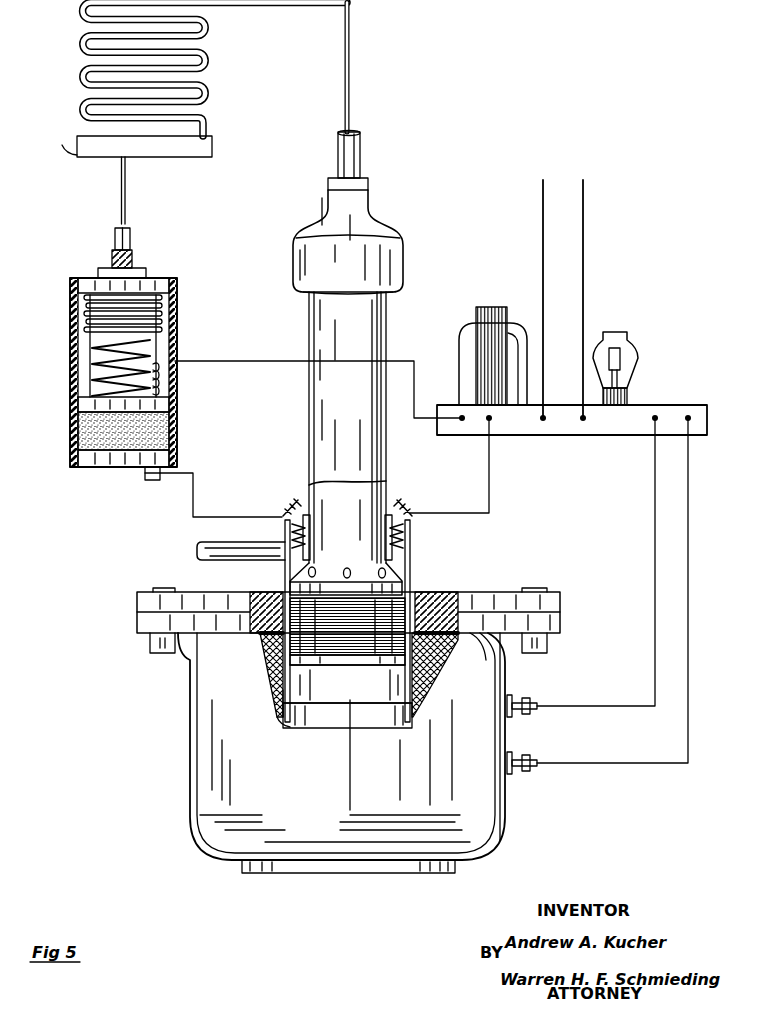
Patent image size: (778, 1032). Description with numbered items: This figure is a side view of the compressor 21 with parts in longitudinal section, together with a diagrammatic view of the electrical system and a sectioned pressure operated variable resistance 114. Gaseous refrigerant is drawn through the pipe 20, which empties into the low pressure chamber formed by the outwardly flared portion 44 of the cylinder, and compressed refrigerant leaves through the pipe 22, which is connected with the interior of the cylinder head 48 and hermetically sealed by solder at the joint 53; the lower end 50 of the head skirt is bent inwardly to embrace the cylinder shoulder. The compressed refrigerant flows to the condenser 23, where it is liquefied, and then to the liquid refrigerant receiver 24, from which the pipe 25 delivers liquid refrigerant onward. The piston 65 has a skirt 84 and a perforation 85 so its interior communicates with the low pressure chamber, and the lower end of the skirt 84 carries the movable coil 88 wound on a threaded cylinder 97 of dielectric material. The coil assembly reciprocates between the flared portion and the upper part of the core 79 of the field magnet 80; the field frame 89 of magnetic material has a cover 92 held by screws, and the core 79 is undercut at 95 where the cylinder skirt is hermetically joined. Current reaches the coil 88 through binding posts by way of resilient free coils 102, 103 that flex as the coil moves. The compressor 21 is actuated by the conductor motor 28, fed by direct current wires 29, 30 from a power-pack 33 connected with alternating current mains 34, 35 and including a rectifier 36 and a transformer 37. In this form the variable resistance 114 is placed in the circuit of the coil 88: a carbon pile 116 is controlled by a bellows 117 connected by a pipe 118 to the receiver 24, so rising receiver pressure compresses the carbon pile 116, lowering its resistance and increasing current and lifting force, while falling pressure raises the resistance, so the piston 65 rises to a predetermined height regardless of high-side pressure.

The pipe 20 is at (200, 553).
The compressor 21 is at (320, 408).
The pipe 22 is at (360, 148).
The condenser 23 is at (207, 62).
The liquid refrigerant receiver 24 is at (204, 147).
The pipe 25 is at (58, 162).
The conductor motor 28 is at (367, 866).
The wire 29 is at (655, 625).
The wire 30 is at (688, 622).
The power-pack 33 is at (580, 435).
The alternating current main 34 is at (543, 242).
The alternating current main 35 is at (583, 244).
The rectifier 36 is at (625, 333).
The transformer 37 is at (484, 307).
The flared portion of cylinder 44 is at (297, 503).
The cylinder head 48 is at (383, 221).
The lower end of skirt 50 is at (400, 293).
The joint 53 is at (368, 184).
The piston 65 is at (392, 555).
The core 79 is at (330, 717).
The field magnet 80 is at (262, 660).
The skirt 84 is at (411, 580).
The perforation 85 is at (285, 580).
The movable coil 88 is at (340, 628).
The field frame 89 is at (203, 793).
The cover 92 is at (560, 595).
The undercut 95 is at (277, 712).
The cylinder of dielectric material 97 is at (352, 650).
The free coil 102 is at (290, 533).
The free coil 103 is at (405, 530).
The variable resistance 114 is at (148, 372).
The carbon pile 116 is at (148, 428).
The bellows 117 is at (175, 322).
The pipe 118 is at (126, 214).